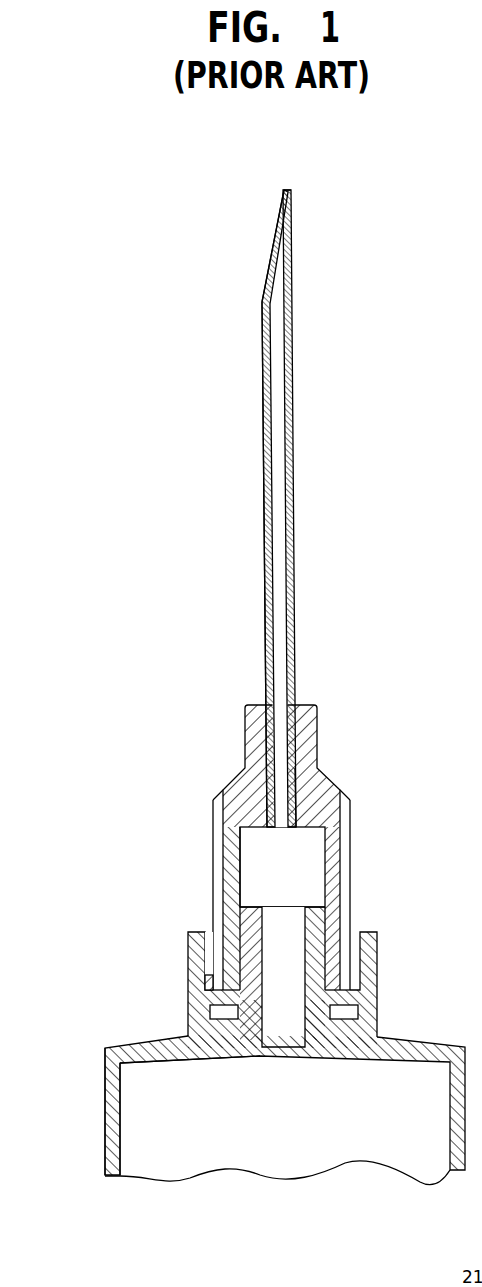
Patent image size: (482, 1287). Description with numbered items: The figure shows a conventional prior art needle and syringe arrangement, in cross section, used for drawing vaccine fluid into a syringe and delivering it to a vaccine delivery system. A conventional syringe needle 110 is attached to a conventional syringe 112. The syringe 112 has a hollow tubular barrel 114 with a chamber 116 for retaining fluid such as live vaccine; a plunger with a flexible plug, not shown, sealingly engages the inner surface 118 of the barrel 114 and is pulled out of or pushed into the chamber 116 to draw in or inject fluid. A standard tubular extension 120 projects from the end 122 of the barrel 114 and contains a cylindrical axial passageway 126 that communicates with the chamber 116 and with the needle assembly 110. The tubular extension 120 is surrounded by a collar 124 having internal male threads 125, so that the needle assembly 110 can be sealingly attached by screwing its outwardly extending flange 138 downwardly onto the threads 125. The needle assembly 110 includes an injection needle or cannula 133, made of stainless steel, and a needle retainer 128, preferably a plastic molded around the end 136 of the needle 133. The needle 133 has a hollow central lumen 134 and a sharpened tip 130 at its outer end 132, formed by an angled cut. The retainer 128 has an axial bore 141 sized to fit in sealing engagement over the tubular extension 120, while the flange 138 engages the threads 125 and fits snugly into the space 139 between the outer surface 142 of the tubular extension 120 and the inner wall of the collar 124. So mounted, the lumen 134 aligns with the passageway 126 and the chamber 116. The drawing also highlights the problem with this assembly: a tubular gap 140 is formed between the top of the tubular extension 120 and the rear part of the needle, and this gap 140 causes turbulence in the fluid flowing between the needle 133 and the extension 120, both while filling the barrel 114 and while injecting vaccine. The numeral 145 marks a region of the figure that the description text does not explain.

The syringe needle 110 is at (218, 490).
The syringe 112 is at (88, 1086).
The hollow tubular barrel 114 is at (105, 1163).
The chamber 116 is at (300, 1133).
The inner surface of the syringe barrel 118 is at (121, 1157).
The tubular extension 120 is at (330, 912).
The end of the barrel 122 is at (105, 1049).
The collar 124 is at (190, 985).
The internal male threads 125 is at (377, 950).
The cylindrical axial passageway 126 is at (225, 965).
The needle retainer 128 is at (213, 805).
The sharpened tip 130 is at (287, 190).
The outer end of the needle 132 is at (262, 298).
The injection needle 133 is at (263, 597).
The lumen 134 is at (278, 470).
The end of the needle 136 is at (295, 792).
The flange 138 is at (355, 996).
The space 139 is at (190, 1032).
The tubular gap 140 is at (312, 843).
The axial bore 141 is at (245, 885).
The outer surface of the tubular extension 142 is at (240, 915).
The passage 145 is at (312, 905).